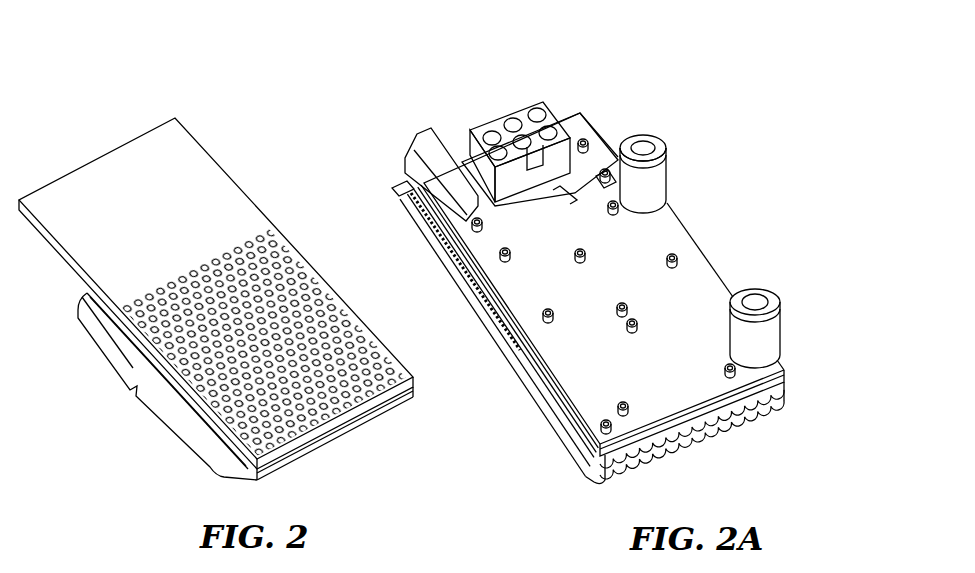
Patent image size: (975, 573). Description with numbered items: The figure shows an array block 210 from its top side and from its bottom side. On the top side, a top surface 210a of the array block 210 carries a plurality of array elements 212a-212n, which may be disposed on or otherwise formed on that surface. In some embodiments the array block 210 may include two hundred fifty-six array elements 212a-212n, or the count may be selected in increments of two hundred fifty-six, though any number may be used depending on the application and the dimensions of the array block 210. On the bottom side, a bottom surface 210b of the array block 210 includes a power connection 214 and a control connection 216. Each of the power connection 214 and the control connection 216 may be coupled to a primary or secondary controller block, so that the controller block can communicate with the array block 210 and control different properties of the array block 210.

In FIG. 2, the array block 210 is at (216, 247).
In FIG. 2A, the array block 210 is at (582, 251).
In FIG. 2, the top surface 210a is at (216, 288).
In FIG. 2A, the bottom surface 210b is at (688, 370).
In FIG. 2, the array elements 212a-212n is at (225, 342).
In FIG. 2A, the power connection 214 is at (520, 112).
In FIG. 2A, the control connection 216 is at (412, 160).